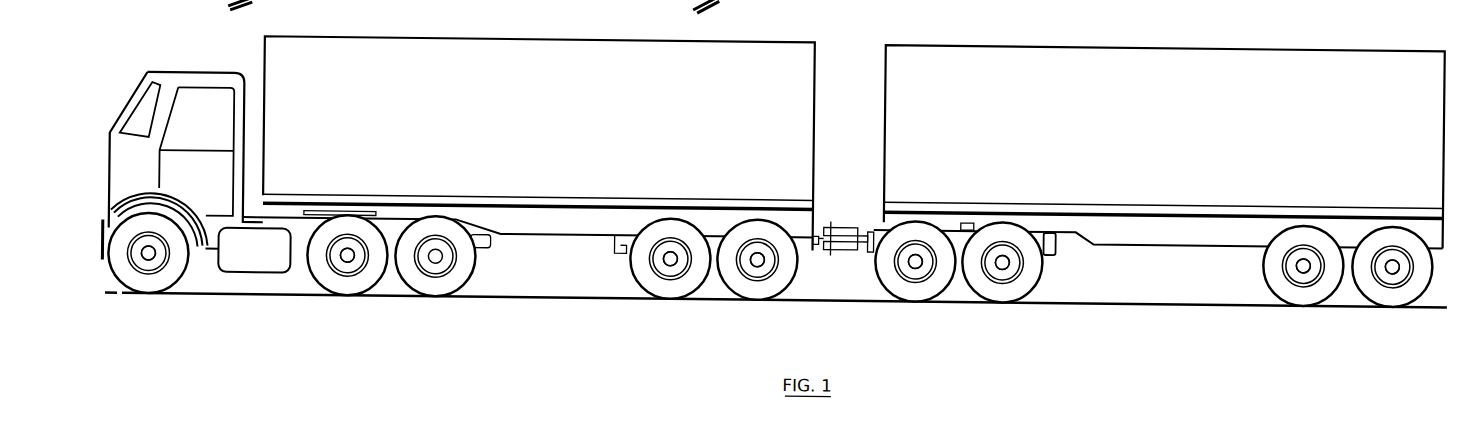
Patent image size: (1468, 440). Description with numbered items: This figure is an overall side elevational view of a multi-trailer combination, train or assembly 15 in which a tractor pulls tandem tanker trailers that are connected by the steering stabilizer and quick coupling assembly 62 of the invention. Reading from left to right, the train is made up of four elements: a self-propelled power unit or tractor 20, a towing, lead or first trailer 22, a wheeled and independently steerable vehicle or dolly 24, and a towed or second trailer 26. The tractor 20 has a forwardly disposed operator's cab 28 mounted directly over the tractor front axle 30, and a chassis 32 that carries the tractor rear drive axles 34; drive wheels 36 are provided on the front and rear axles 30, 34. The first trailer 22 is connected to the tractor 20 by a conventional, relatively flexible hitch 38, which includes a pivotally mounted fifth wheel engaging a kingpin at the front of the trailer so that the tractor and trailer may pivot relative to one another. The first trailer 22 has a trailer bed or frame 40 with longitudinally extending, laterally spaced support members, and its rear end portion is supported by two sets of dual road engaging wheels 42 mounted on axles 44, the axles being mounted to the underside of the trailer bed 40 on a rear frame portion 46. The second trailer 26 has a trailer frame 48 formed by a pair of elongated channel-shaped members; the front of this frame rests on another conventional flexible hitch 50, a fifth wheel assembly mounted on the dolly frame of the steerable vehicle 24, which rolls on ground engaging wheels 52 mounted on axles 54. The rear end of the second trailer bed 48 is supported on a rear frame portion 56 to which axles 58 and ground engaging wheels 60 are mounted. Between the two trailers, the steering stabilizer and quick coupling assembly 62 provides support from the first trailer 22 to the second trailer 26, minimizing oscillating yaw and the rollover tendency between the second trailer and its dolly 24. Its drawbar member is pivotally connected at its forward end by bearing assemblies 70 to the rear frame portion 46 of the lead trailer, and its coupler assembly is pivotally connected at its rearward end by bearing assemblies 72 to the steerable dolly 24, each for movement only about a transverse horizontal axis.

The multi-trailer combination 15 is at (566, 339).
The tractor 20 is at (178, 55).
The first trailer 22 is at (767, 21).
The dolly 24 is at (1061, 241).
The second trailer 26 is at (1330, 30).
The operator's cab 28 is at (183, 178).
The tractor front axle 30 is at (152, 256).
The chassis 32 is at (485, 235).
The tractor rear drive axles 34 is at (347, 256).
The drive wheels 36 is at (146, 282).
The hitch 38 is at (326, 207).
The trailer bed 40 is at (550, 227).
The dual road engaging wheels 42 is at (745, 281).
The axles 44 is at (669, 256).
The rear frame portion 46 is at (613, 246).
The trailer frame 48 is at (1223, 193).
The hitch 50 is at (968, 213).
The ground engaging wheels 52 is at (985, 282).
The axles 54 is at (915, 257).
The rear frame portion 56 is at (1149, 229).
The axles 58 is at (1303, 257).
The ground engaging wheels 60 is at (1378, 281).
The steering stabilizer and quick coupling assembly 62 is at (845, 212).
The bearing assemblies 70 is at (812, 238).
The bearing assemblies 72 is at (864, 236).